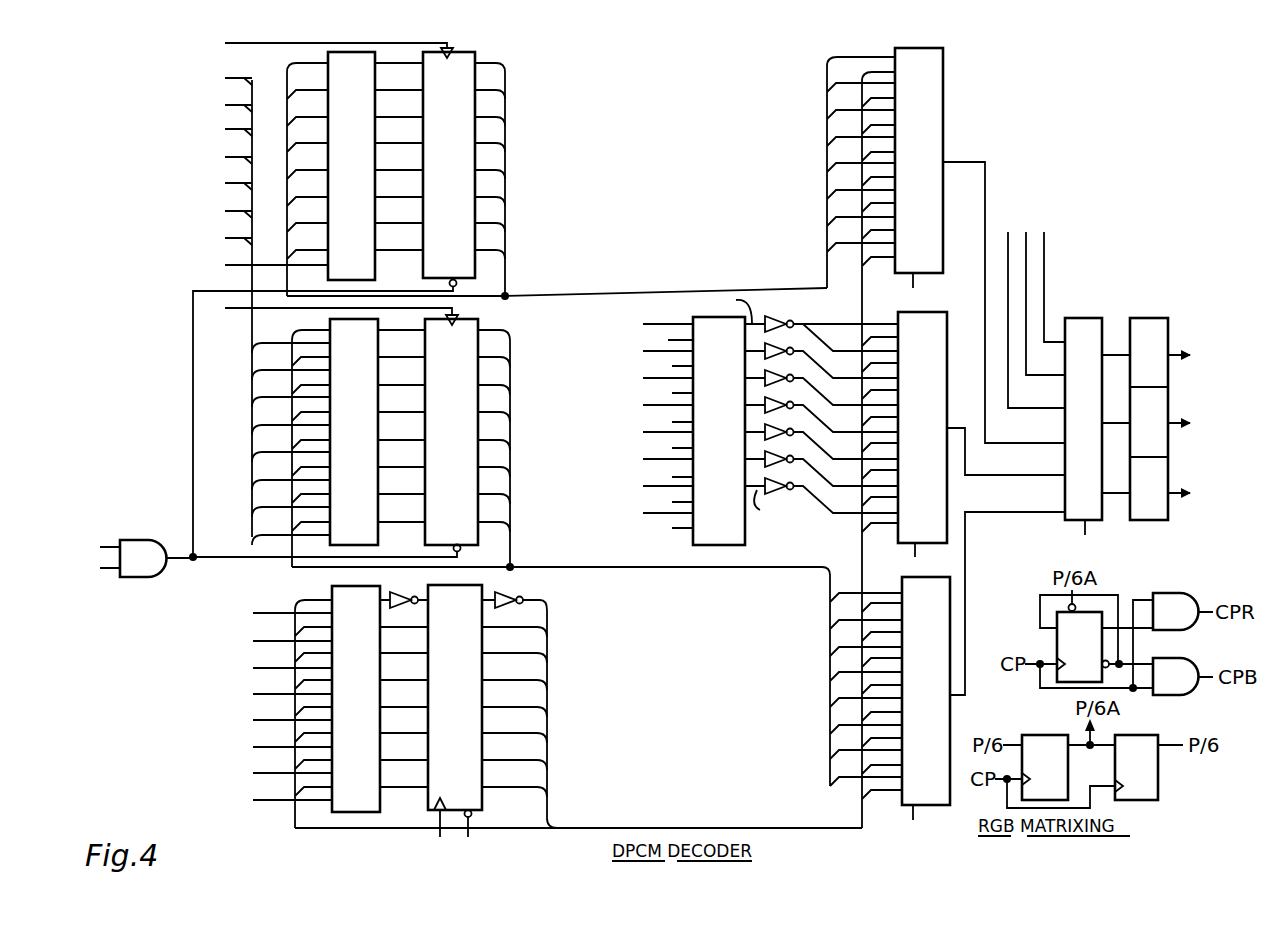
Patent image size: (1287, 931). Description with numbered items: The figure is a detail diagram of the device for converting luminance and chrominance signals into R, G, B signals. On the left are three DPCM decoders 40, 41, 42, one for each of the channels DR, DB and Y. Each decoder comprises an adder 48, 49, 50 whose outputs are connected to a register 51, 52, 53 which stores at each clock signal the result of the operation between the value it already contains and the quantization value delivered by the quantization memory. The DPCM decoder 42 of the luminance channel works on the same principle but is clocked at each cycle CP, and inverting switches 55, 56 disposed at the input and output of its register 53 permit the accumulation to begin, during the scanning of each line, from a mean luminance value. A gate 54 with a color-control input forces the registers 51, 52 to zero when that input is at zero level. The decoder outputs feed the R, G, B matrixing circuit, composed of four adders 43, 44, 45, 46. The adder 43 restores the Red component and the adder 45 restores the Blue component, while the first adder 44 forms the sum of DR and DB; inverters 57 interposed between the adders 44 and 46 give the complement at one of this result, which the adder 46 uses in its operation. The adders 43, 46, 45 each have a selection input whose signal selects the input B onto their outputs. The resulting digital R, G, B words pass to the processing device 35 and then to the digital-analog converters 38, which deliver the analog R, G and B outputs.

The processing device 35 is at (1087, 318).
The digital-analog converters 38 is at (1148, 318).
The DPCM decoder 40 is at (224, 135).
The DPCM decoder 41 is at (243, 471).
The DPCM decoder 42 is at (217, 706).
The adder 43 is at (847, 41).
The adder 44 is at (735, 362).
The adder 45 is at (944, 629).
The adder 46 is at (938, 361).
The adder 48 is at (369, 97).
The adder 49 is at (372, 369).
The adder 50 is at (374, 637).
The register 51 is at (467, 97).
The register 52 is at (469, 377).
The register 53 is at (473, 756).
The gate 54 is at (145, 540).
The inverting switch 55 is at (414, 606).
The inverting switch 56 is at (532, 603).
The inverters 57 is at (780, 489).